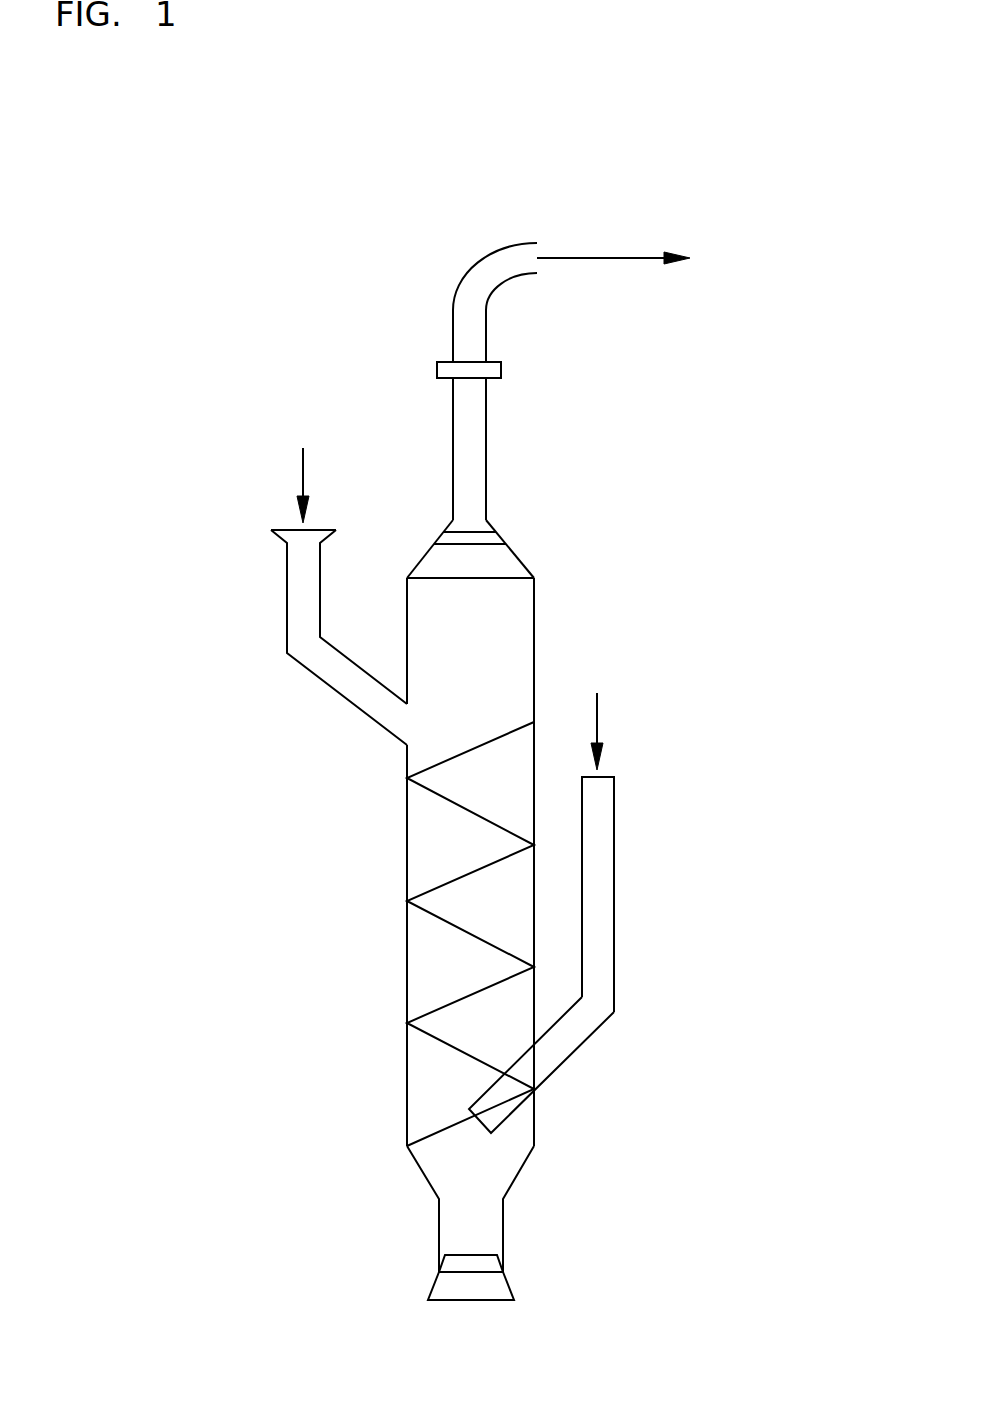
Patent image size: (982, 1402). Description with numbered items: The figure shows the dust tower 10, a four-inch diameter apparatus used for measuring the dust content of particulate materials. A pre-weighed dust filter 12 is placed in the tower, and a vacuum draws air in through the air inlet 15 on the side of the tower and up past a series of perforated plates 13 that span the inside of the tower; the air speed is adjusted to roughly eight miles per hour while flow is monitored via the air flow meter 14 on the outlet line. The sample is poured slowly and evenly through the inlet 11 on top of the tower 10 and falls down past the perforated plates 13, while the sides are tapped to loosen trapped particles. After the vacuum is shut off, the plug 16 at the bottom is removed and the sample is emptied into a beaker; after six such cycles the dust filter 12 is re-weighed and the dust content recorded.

The dust tower 10 is at (590, 608).
The inlet 11 is at (303, 575).
The dust filter 12 is at (465, 543).
The perforated plates 13 is at (460, 875).
The air flow meter 14 is at (427, 369).
The air inlet 15 is at (598, 815).
The plug 16 is at (485, 1285).